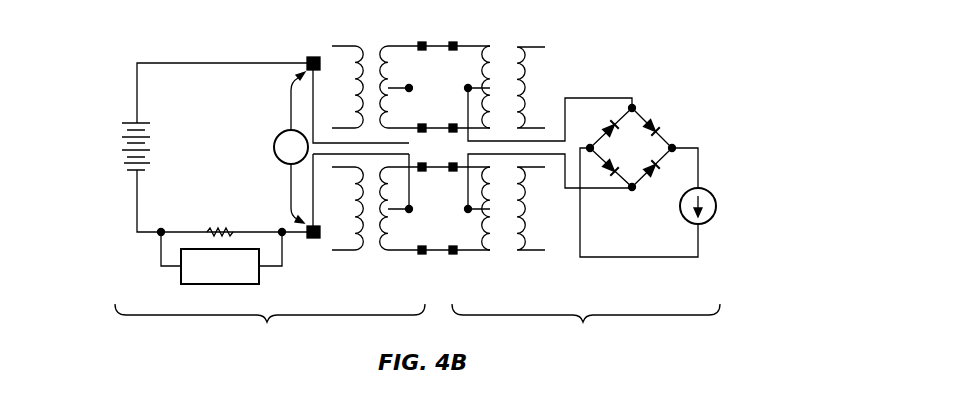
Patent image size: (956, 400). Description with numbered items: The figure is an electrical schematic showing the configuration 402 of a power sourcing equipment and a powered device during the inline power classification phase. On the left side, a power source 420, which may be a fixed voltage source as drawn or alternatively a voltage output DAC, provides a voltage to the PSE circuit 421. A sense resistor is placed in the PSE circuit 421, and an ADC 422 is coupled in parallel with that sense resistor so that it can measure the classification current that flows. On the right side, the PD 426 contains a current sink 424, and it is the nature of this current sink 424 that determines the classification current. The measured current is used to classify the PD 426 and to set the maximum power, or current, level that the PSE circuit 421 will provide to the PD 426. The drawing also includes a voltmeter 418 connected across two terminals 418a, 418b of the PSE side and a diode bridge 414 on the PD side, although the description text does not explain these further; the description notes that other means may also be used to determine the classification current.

The configuration 402 is at (779, 81).
The diode bridge rectifier 414 is at (643, 112).
The voltmeter 418 is at (274, 147).
The first voltage measurement terminal 418a is at (307, 60).
The second voltage measurement terminal 418b is at (313, 240).
The power source 420 is at (147, 143).
The PSE circuit 421 is at (270, 325).
The ADC 422 is at (247, 284).
The current sink 424 is at (716, 200).
The PD 426 is at (586, 325).